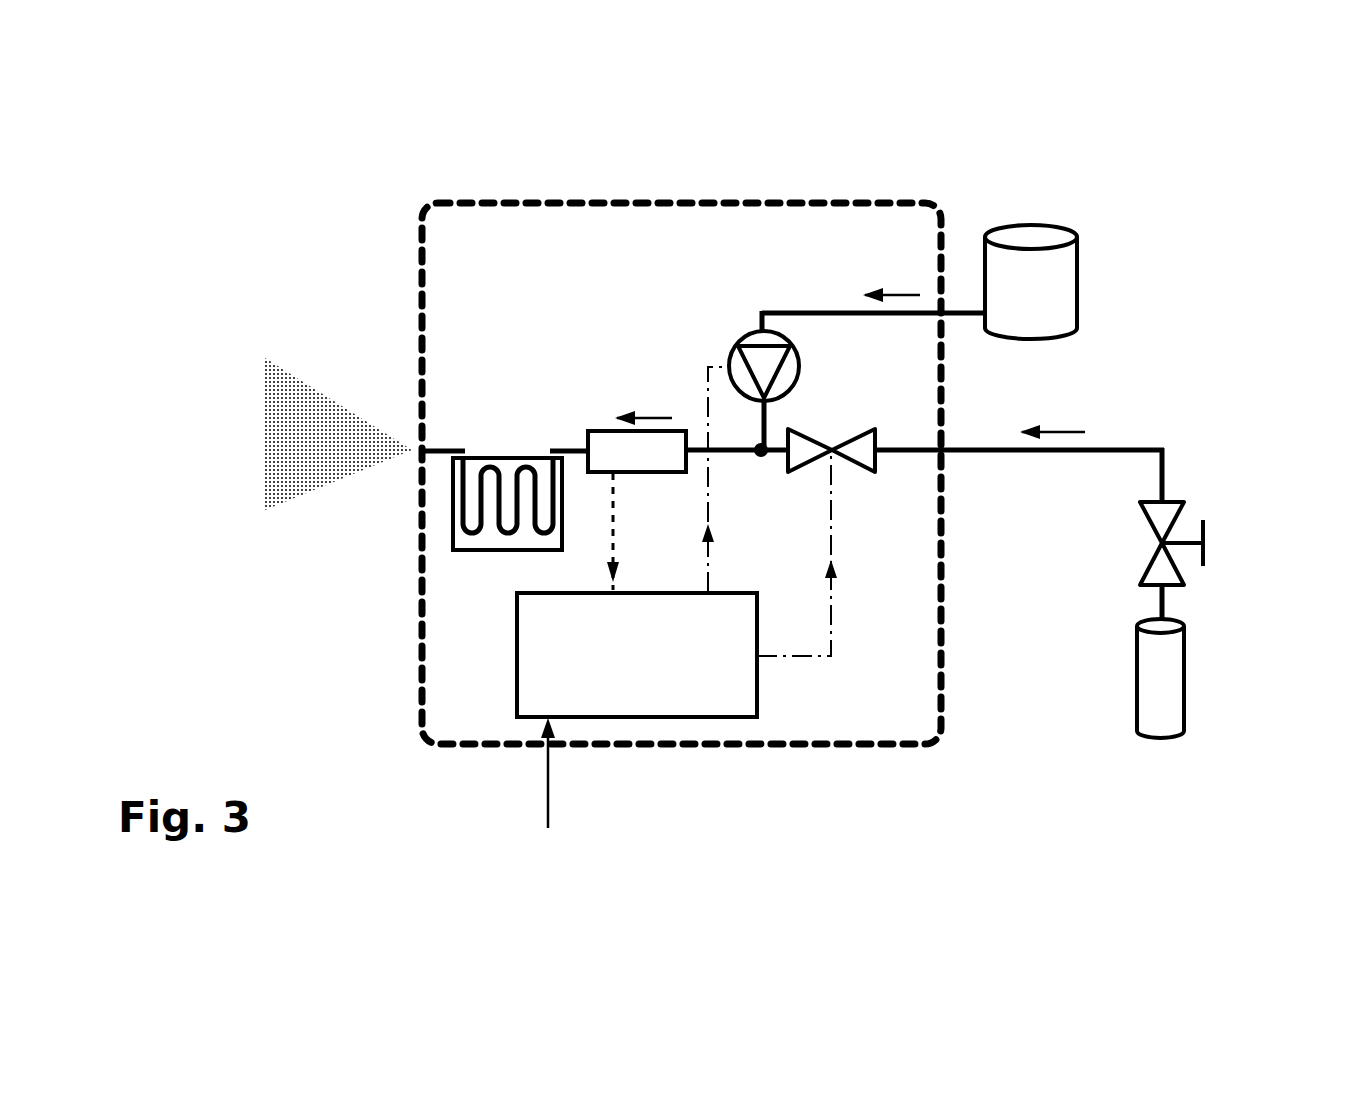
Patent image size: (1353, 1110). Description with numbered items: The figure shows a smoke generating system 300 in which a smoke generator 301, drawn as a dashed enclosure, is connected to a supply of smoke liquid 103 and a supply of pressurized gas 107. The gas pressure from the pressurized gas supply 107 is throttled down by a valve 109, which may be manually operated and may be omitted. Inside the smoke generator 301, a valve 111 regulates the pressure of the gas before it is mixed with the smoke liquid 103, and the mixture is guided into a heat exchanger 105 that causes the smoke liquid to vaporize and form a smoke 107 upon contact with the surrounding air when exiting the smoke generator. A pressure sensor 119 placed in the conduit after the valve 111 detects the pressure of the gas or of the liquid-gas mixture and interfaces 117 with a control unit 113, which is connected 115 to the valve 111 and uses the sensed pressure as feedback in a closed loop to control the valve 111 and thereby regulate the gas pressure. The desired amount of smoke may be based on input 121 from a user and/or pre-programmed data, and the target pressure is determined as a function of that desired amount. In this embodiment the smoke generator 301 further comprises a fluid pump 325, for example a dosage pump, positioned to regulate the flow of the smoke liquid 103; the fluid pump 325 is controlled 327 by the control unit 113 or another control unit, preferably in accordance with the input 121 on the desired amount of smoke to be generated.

The smoke generating system 300 is at (1137, 184).
The smoke generator 301 is at (420, 228).
The supply of smoke liquid 103 is at (1030, 225).
The fluid pump 325 is at (742, 340).
The fluid pump control connection 327 is at (705, 398).
The valve 111 is at (831, 448).
The heat exchanger 105 is at (514, 456).
The pressure sensor 119 is at (637, 451).
The pressure sensor interface 117 is at (612, 533).
The control unit 113 is at (637, 655).
The control unit to valve connection 115 is at (831, 656).
The input 121 is at (549, 795).
The valve 109 is at (1160, 544).
The pressurized gas / smoke 107 is at (317, 457).